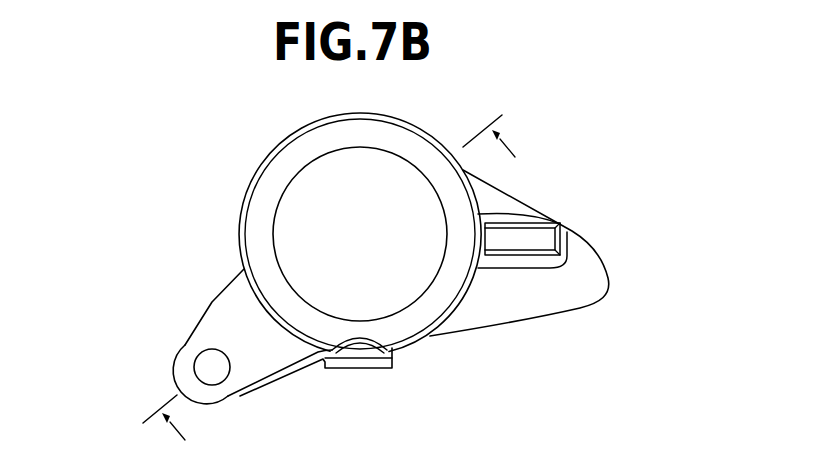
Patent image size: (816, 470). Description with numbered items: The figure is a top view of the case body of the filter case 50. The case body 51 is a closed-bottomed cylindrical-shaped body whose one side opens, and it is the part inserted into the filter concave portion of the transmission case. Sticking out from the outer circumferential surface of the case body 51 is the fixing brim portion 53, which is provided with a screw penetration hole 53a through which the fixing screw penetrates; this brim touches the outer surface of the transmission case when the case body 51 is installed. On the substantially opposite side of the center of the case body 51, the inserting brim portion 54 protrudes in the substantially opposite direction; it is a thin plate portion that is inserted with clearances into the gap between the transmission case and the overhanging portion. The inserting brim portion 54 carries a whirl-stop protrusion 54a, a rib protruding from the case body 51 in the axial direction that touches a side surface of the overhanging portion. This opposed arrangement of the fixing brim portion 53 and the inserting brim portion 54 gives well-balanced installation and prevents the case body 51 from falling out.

The filter case 50 is at (180, 180).
The case body 51 is at (330, 182).
The fixing brim portion 53 is at (253, 350).
The screw penetration hole 53a is at (208, 365).
The inserting brim portion 54 is at (532, 297).
The whirl-stop protrusion 54a is at (524, 242).